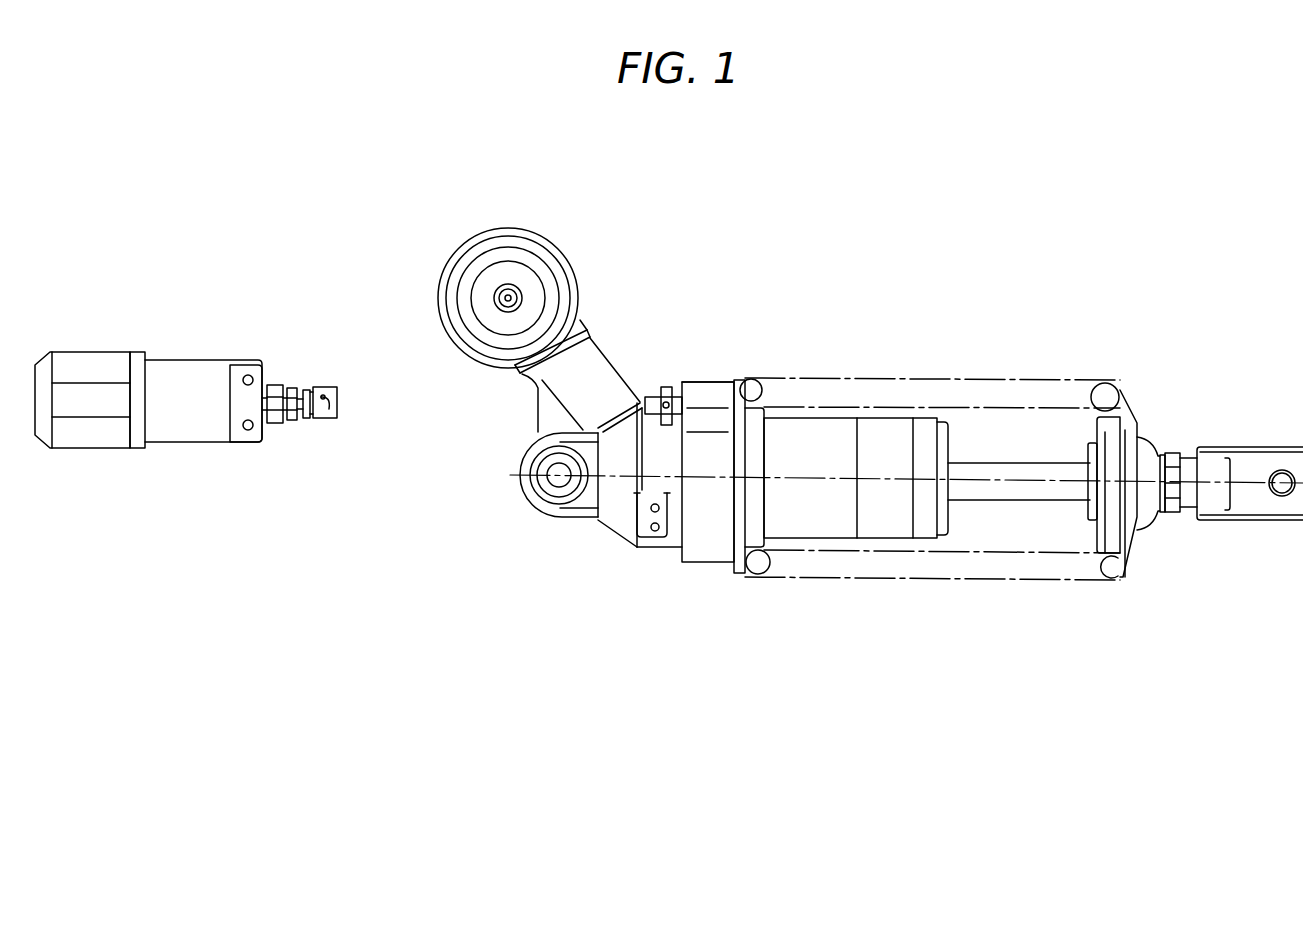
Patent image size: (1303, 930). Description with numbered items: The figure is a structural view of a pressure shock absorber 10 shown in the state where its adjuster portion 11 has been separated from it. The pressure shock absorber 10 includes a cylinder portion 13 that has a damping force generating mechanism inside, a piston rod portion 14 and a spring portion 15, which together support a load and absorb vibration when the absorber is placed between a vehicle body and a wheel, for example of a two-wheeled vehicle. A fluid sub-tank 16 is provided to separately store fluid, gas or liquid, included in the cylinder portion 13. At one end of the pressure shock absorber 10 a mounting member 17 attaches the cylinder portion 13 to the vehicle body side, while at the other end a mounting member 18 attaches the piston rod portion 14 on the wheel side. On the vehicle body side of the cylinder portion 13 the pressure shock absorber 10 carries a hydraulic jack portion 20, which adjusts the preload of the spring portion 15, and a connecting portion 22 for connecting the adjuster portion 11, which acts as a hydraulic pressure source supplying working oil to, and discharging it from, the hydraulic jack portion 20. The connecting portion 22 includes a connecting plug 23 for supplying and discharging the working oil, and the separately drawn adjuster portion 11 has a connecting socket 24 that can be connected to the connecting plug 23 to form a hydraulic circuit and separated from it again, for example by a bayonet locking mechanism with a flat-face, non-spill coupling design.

The pressure shock absorber 10 is at (893, 483).
The adjuster portion 11 is at (186, 441).
The cylinder portion 13 is at (930, 413).
The piston rod portion 14 is at (1035, 460).
The spring portion 15 is at (1110, 384).
The fluid sub-tank 16 is at (548, 262).
The mounting member 17 is at (532, 505).
The mounting member 18 is at (1260, 507).
The hydraulic jack portion 20 is at (694, 591).
The connecting portion 22 is at (684, 363).
The connecting plug 23 is at (652, 395).
The connecting socket 24 is at (313, 386).